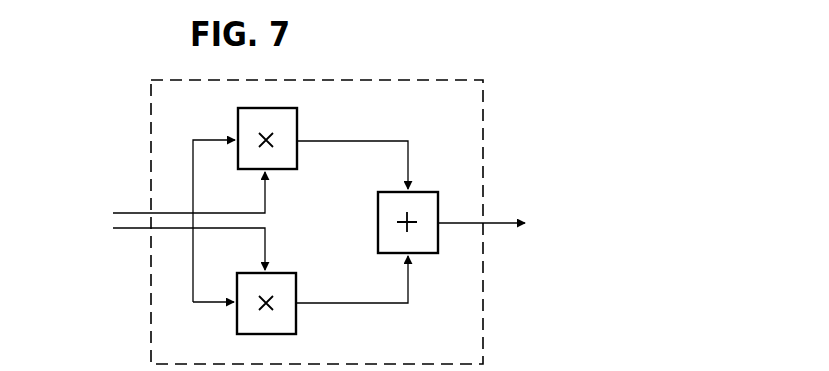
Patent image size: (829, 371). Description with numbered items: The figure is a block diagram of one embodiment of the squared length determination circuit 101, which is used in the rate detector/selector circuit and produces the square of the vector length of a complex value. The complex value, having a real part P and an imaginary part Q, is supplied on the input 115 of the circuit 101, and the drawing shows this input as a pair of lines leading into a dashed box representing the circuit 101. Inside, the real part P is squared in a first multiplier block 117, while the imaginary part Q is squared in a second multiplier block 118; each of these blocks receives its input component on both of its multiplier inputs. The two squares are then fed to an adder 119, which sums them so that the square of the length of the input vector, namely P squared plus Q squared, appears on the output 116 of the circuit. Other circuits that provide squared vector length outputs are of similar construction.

The squared length determination circuit 101 is at (430, 80).
The input 115 is at (128, 213).
The output signal |P,Q|^2 116 is at (497, 222).
The squaring multiplier for the real part 117 is at (292, 122).
The squaring multiplier for the imaginary part 118 is at (287, 280).
The adder 119 is at (386, 207).